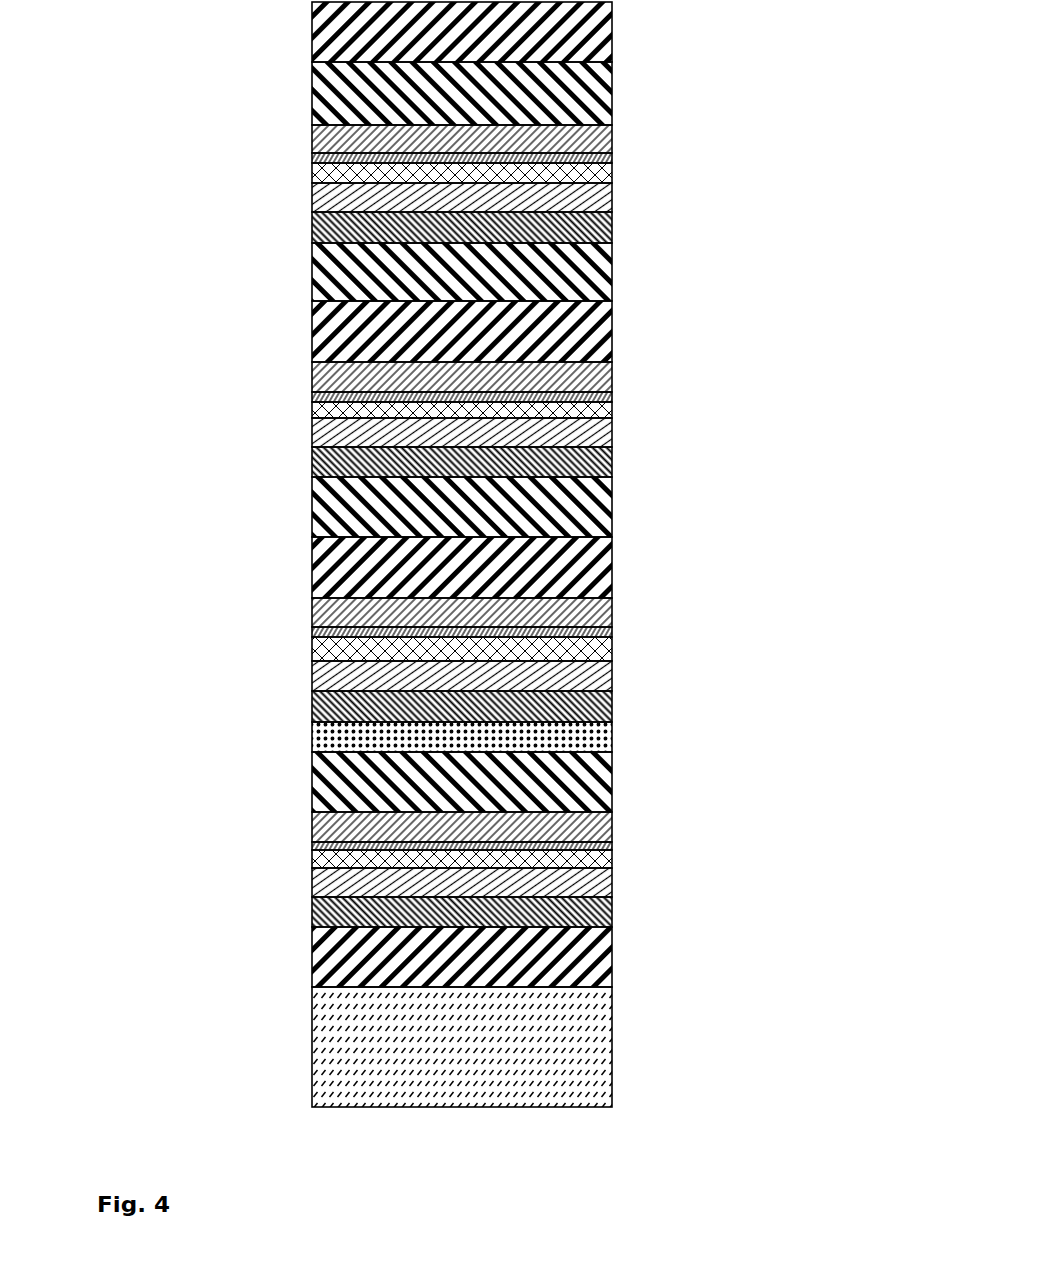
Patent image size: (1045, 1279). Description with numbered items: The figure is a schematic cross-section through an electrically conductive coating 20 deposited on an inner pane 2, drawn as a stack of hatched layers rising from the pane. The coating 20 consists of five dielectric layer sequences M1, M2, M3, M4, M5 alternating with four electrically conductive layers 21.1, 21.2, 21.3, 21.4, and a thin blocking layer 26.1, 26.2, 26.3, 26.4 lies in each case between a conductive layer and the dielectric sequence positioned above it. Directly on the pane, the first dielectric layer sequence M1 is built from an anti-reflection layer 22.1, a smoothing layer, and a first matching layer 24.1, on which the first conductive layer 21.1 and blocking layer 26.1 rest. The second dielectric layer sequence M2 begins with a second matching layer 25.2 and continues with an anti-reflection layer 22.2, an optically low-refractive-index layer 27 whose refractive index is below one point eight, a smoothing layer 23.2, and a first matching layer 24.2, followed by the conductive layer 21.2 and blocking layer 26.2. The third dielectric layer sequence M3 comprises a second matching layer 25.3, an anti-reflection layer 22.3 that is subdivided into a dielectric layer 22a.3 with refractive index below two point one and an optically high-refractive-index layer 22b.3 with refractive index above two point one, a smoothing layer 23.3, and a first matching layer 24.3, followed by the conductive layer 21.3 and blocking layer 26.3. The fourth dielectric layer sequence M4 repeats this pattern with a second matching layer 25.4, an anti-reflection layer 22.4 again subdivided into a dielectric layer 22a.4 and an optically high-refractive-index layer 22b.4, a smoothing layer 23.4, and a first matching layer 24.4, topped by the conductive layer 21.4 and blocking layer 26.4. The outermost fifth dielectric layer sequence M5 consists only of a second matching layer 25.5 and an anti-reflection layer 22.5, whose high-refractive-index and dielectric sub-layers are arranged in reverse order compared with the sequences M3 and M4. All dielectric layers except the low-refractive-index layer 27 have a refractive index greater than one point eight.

The inner pane 2 is at (577, 1050).
The electrically conductive coating 20 is at (267, 2).
The electrically conductive layer 21.1 is at (552, 858).
The electrically conductive layer 21.2 is at (552, 651).
The electrically conductive layer 21.3 is at (552, 410).
The electrically conductive layer 21.4 is at (552, 175).
The anti-reflection layer 22.1 is at (360, 957).
The anti-reflection layer 22.2 is at (360, 789).
The anti-reflection layer 22.3 is at (299, 477).
The anti-reflection layer 22.4 is at (299, 243).
The anti-reflection layer 22.5 is at (299, 3).
The dielectric layer 22a.3 is at (552, 568).
The optically high-refractive-index layer 22b.3 is at (552, 510).
The dielectric layer 22a.4 is at (552, 36).
The optically high-refractive-index layer 22b.4 is at (552, 94).
The smoothing layer 23.2 is at (552, 707).
The smoothing layer 23.3 is at (552, 463).
The smoothing layer 23.4 is at (552, 229).
The first matching layer 24.1 is at (552, 888).
The first matching layer 24.2 is at (552, 676).
The first matching layer 24.3 is at (552, 436).
The first matching layer 24.4 is at (552, 196).
The second matching layer 25.2 is at (552, 827).
The second matching layer 25.3 is at (552, 607).
The second matching layer 25.4 is at (552, 374).
The second matching layer 25.5 is at (552, 138).
The blocking layer 26.1 is at (312, 847).
The blocking layer 26.2 is at (312, 632).
The blocking layer 26.3 is at (312, 397).
The blocking layer 26.4 is at (312, 159).
The optically low-refractive-index layer 27 is at (365, 736).
The first dielectric layer sequence M1 is at (737, 868).
The second dielectric layer sequence M2 is at (737, 661).
The third dielectric layer sequence M3 is at (737, 418).
The fourth dielectric layer sequence M4 is at (737, 182).
The fifth dielectric layer sequence M5 is at (737, 2).